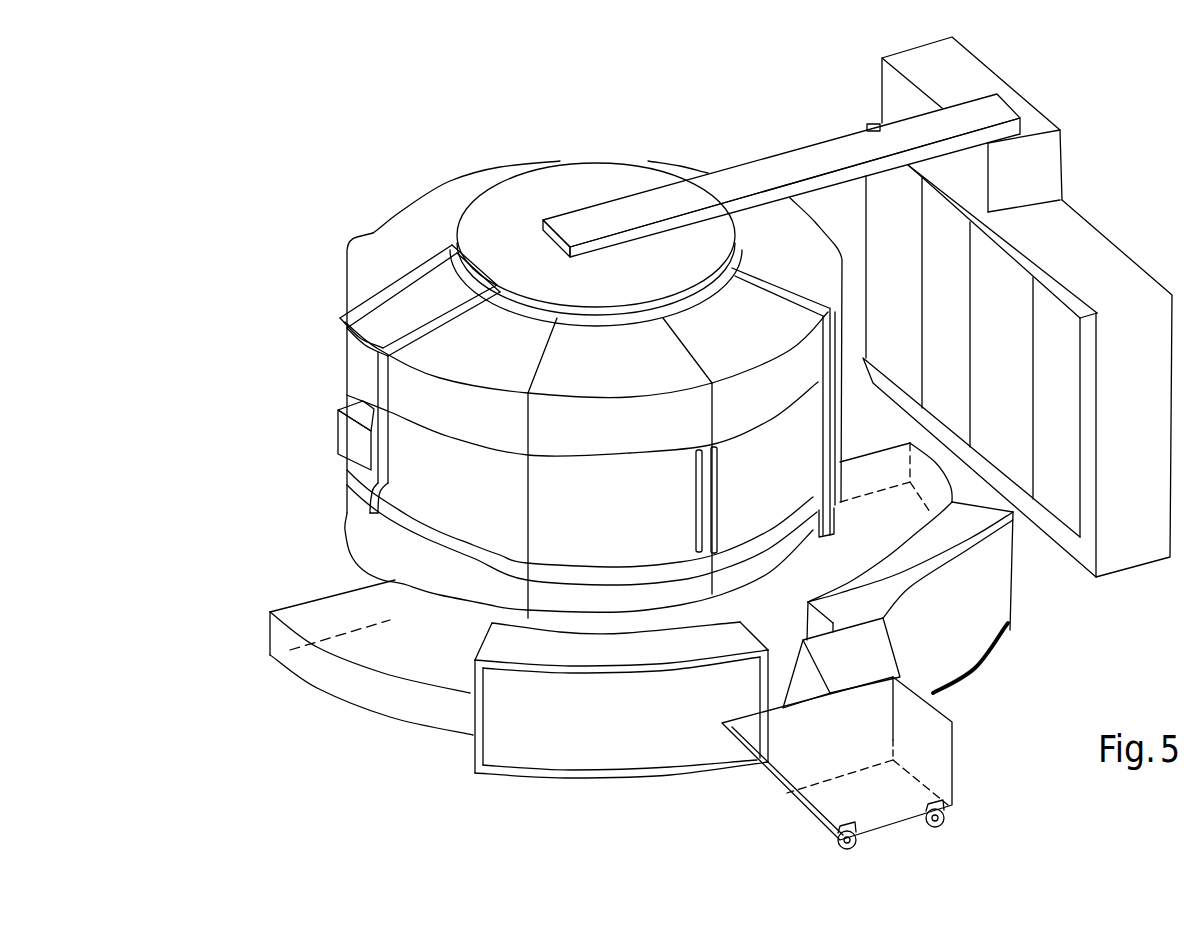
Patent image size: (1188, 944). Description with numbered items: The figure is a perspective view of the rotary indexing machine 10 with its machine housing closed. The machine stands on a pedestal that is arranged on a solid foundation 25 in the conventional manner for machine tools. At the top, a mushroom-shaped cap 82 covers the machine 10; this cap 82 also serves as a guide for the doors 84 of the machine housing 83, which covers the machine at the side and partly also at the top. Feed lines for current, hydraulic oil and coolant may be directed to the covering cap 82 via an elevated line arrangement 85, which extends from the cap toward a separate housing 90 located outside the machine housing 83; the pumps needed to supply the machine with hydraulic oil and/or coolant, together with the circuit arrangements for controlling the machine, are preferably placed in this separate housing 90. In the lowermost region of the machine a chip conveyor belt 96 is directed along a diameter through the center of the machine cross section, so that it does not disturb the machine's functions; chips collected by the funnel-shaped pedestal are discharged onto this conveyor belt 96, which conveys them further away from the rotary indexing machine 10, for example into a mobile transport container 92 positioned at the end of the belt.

The rotary indexing machine 10 is at (300, 153).
The foundation 25 is at (342, 687).
The mushroom-shaped cap 82 is at (502, 202).
The machine housing 83 is at (394, 379).
The doors 84 is at (707, 322).
The elevated line arrangement 85 is at (802, 162).
The separate housing 90 is at (1105, 205).
The mobile transport container 92 is at (933, 752).
The chip conveyor belt 96 is at (885, 651).